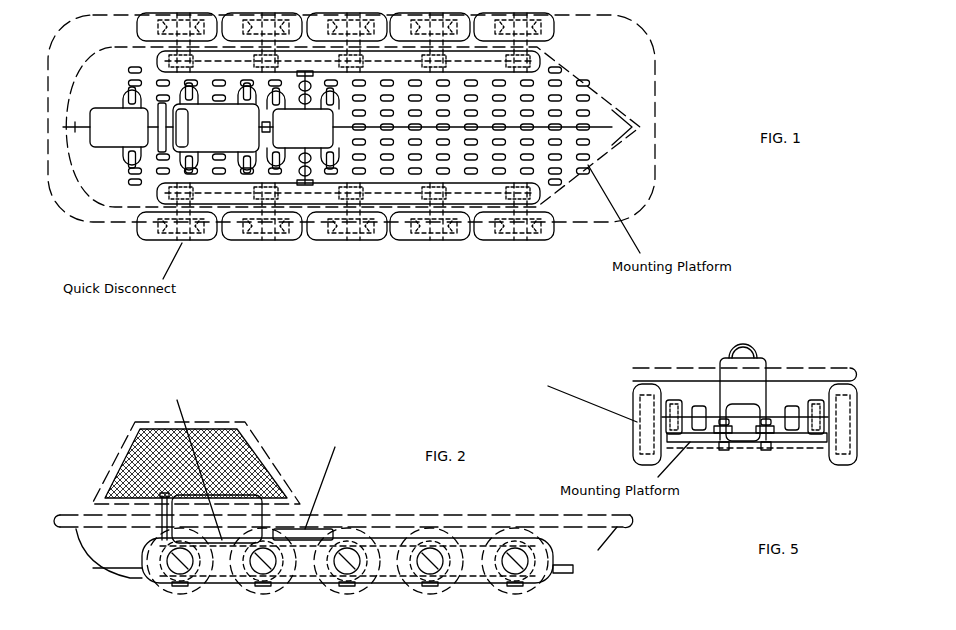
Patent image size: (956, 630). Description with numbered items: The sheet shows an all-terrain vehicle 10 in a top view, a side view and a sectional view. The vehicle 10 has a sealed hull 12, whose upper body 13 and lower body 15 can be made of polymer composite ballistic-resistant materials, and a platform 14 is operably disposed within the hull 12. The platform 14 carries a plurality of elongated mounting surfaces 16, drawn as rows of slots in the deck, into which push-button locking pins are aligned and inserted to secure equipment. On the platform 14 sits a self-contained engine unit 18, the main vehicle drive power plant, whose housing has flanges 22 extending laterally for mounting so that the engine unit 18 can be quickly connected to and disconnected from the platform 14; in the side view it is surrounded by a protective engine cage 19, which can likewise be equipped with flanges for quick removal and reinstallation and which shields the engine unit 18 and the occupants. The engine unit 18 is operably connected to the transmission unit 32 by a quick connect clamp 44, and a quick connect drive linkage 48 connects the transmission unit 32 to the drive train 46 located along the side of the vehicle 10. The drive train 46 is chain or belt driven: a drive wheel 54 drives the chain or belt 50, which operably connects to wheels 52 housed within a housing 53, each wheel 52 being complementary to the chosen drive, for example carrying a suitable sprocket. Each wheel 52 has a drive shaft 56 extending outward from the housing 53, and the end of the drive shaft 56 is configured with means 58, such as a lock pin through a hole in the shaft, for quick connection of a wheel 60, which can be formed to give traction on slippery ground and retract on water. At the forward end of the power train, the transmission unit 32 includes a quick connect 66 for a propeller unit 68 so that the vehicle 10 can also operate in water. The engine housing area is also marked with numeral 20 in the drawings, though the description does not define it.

In FIG. 1, the all-terrain vehicle 10 is at (85, 309).
In FIG. 5, the all-terrain vehicle 10 is at (715, 338).
In FIG. 2, the all-terrain vehicle 10 is at (94, 418).
In FIG. 1, the sealed hull 12 is at (627, 105).
In FIG. 5, the sealed hull 12 is at (808, 452).
In FIG. 2, the sealed hull 12 is at (105, 556).
In FIG. 2, the upper body 13 is at (95, 472).
In FIG. 5, the platform 14 is at (518, 365).
In FIG. 2, the platform 14 is at (134, 563).
In FIG. 2, the lower body 15 is at (103, 580).
In FIG. 1, the elongated mounting surfaces 16 is at (575, 158).
In FIG. 1, the engine unit 18 is at (197, 124).
In FIG. 5, the engine unit 18 is at (754, 372).
In FIG. 2, the engine unit 18 is at (242, 500).
In FIG. 2, the protective engine cage 19 is at (230, 506).
In FIG. 1, the engine housing 20 is at (208, 124).
In FIG. 5, the engine housing 20 is at (748, 380).
In FIG. 2, the engine housing 20 is at (232, 517).
In FIG. 1, the flanges 22 is at (189, 166).
In FIG. 1, the transmission unit 32 is at (318, 138).
In FIG. 5, the transmission unit 32 is at (800, 344).
In FIG. 2, the transmission unit 32 is at (318, 532).
In FIG. 1, the quick connect clamp 44 is at (268, 130).
In FIG. 1, the drive train 46 is at (477, 203).
In FIG. 5, the drive train 46 is at (675, 410).
In FIG. 1, the quick connect drive linkage 48 is at (277, 168).
In FIG. 5, the quick connect drive linkage 48 is at (792, 430).
In FIG. 2, the chain or belt 50 is at (555, 574).
In FIG. 1, the wheels 52 is at (540, 187).
In FIG. 2, the wheels 52 is at (540, 553).
In FIG. 1, the housing 53 is at (392, 203).
In FIG. 2, the housing 53 is at (476, 538).
In FIG. 1, the drive wheel 54 is at (303, 172).
In FIG. 2, the drive wheel 54 is at (333, 532).
In FIG. 1, the drive shaft 56 is at (515, 222).
In FIG. 2, the drive shaft 56 is at (533, 570).
In FIG. 1, the means for quick connection 58 is at (510, 238).
In FIG. 5, the means for quick connection 58 is at (634, 425).
In FIG. 2, the means for quick connection 58 is at (511, 556).
In FIG. 1, the wheel 60 is at (490, 240).
In FIG. 5, the wheel 60 is at (636, 446).
In FIG. 1, the quick connect 66 is at (160, 133).
In FIG. 1, the propeller unit 68 is at (115, 137).